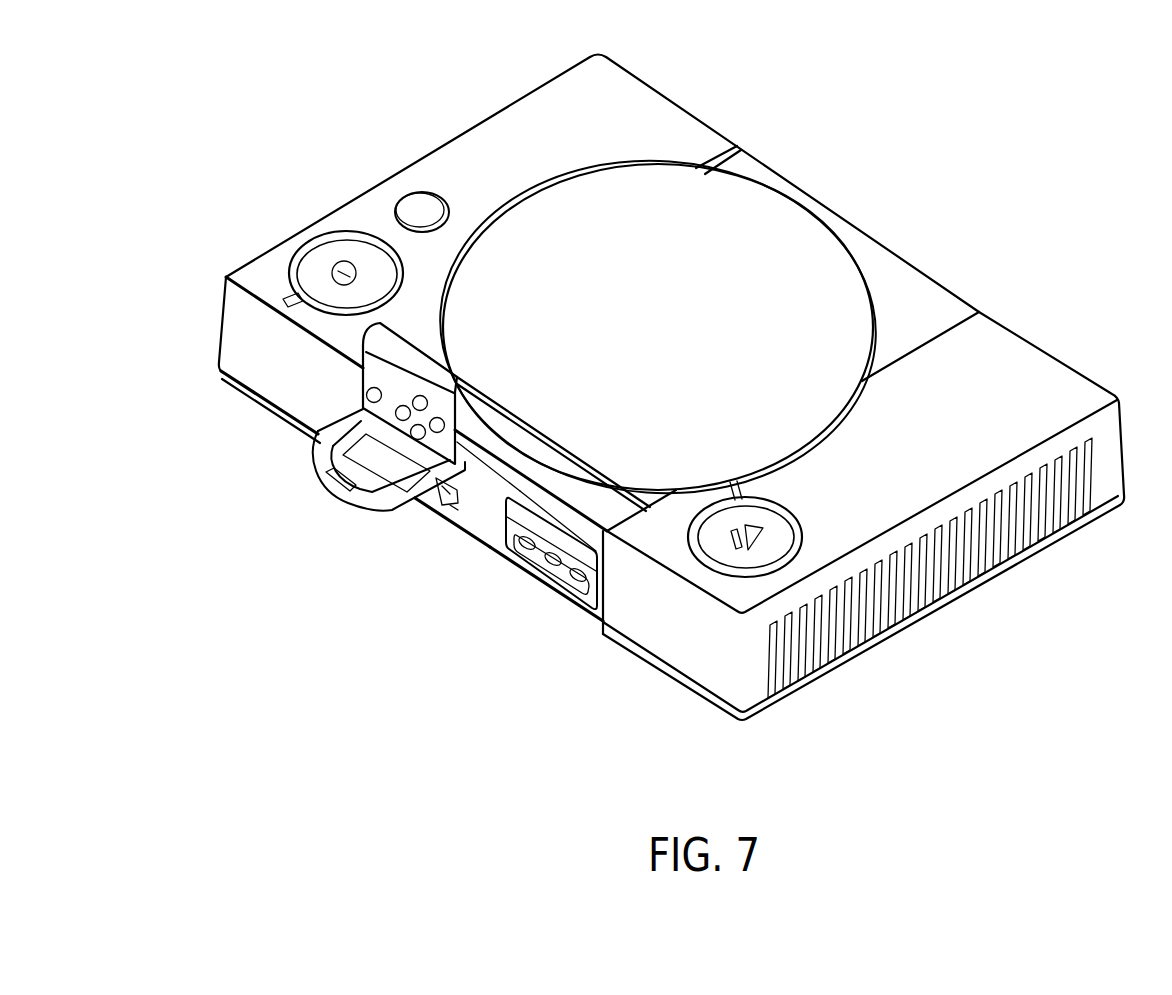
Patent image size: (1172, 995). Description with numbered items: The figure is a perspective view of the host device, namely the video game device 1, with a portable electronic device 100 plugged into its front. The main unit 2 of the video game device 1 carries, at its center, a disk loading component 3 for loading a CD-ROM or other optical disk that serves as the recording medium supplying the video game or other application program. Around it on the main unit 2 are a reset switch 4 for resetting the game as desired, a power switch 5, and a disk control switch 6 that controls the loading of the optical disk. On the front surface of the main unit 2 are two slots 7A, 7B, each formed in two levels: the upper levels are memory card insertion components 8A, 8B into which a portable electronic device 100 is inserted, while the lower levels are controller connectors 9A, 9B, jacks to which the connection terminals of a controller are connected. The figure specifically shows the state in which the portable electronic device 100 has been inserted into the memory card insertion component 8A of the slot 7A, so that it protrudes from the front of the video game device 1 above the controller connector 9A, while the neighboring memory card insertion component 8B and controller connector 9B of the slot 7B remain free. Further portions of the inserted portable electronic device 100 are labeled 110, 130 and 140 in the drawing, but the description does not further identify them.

The video game device 1 is at (919, 190).
The main unit 2 is at (1050, 377).
The disk loading component 3 is at (750, 204).
The reset switch 4 is at (418, 204).
The power switch 5 is at (312, 260).
The disk control switch 6 is at (782, 545).
The slot 7A is at (453, 510).
The slot 7B is at (537, 588).
The memory card insertion component 8A is at (457, 472).
The memory card insertion component 8B is at (607, 545).
The controller connector 9A is at (446, 522).
The controller connector 9B is at (597, 606).
The portable electronic device 100 is at (299, 467).
The operation button portion 110 is at (362, 368).
The display 130 is at (398, 482).
The connector cover 140 is at (333, 499).